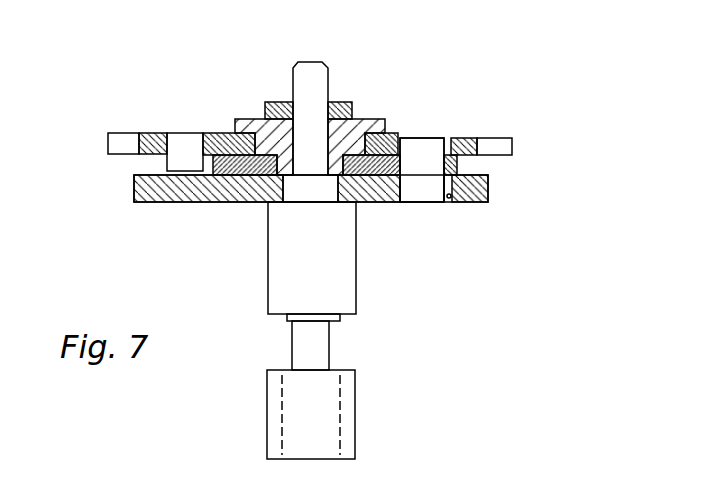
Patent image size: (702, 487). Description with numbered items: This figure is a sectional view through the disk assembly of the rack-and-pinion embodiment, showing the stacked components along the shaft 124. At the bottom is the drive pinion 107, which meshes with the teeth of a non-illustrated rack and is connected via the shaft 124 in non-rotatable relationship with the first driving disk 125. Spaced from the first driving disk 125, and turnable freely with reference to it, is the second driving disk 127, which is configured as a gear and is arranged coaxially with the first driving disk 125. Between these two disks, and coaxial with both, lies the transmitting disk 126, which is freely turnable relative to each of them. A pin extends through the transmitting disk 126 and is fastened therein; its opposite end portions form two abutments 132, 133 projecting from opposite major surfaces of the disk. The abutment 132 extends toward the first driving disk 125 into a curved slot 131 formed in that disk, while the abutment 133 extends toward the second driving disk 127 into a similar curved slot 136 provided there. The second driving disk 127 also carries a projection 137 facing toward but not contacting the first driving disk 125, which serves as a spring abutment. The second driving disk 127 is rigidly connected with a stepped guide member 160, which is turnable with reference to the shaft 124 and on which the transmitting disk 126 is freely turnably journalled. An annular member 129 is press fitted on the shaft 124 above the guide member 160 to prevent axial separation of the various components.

The drive pinion 107 is at (325, 438).
The shaft 124 is at (323, 343).
The first driving disk 125 is at (235, 197).
The transmitting disk 126 is at (457, 168).
The second driving disk 127 is at (145, 133).
The annular member 129 is at (282, 108).
The curved slot 131 is at (452, 198).
The abutment 132 is at (414, 192).
The abutment 133 is at (433, 150).
The curved slot 136 is at (398, 137).
The projection 137 is at (187, 163).
The stepped guide member 160 is at (363, 119).